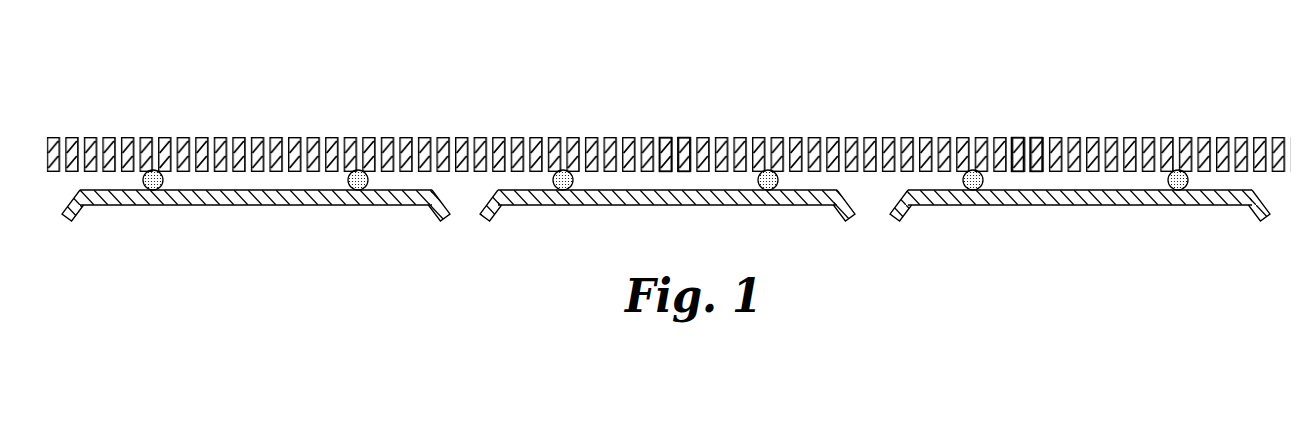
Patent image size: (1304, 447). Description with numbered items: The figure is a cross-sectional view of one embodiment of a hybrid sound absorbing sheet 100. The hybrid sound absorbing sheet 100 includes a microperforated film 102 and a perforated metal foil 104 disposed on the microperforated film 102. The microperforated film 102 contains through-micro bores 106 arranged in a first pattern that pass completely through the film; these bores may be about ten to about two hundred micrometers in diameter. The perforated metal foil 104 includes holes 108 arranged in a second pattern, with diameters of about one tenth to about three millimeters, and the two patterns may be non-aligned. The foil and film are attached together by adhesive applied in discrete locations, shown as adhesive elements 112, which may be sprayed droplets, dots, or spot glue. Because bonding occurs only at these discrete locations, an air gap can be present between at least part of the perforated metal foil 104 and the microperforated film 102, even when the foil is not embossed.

The hybrid sound absorbing sheet 100 is at (1190, 90).
The microperforated film 102 is at (868, 137).
The perforated metal foil 104 is at (1013, 206).
The through-micro bores 106 is at (692, 137).
The holes 108 is at (462, 206).
The adhesive elements 112 is at (357, 190).